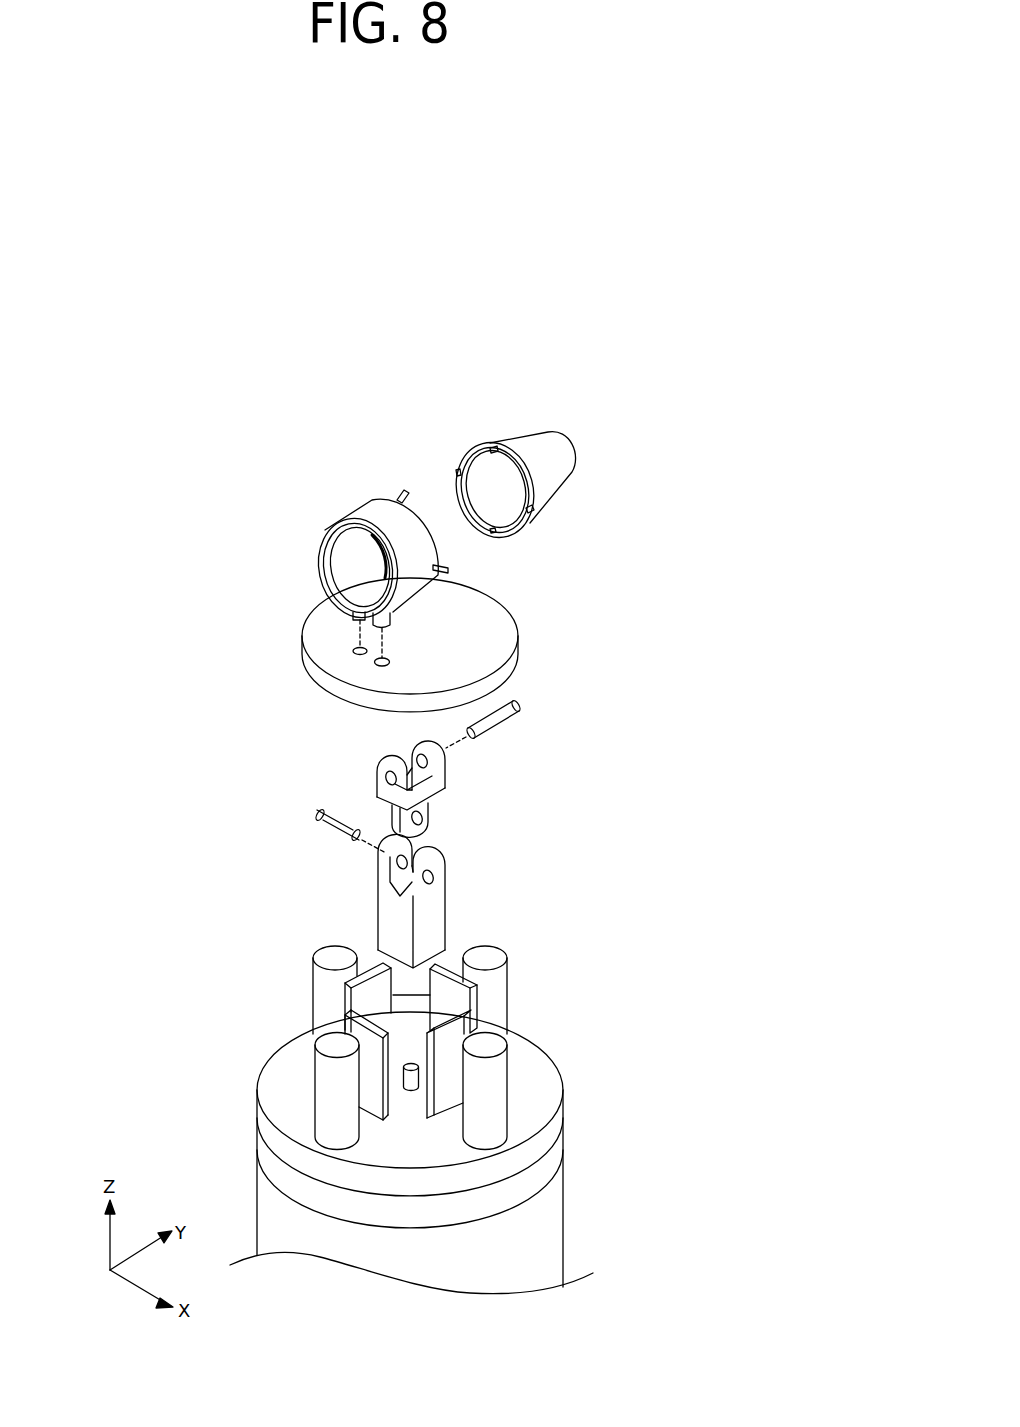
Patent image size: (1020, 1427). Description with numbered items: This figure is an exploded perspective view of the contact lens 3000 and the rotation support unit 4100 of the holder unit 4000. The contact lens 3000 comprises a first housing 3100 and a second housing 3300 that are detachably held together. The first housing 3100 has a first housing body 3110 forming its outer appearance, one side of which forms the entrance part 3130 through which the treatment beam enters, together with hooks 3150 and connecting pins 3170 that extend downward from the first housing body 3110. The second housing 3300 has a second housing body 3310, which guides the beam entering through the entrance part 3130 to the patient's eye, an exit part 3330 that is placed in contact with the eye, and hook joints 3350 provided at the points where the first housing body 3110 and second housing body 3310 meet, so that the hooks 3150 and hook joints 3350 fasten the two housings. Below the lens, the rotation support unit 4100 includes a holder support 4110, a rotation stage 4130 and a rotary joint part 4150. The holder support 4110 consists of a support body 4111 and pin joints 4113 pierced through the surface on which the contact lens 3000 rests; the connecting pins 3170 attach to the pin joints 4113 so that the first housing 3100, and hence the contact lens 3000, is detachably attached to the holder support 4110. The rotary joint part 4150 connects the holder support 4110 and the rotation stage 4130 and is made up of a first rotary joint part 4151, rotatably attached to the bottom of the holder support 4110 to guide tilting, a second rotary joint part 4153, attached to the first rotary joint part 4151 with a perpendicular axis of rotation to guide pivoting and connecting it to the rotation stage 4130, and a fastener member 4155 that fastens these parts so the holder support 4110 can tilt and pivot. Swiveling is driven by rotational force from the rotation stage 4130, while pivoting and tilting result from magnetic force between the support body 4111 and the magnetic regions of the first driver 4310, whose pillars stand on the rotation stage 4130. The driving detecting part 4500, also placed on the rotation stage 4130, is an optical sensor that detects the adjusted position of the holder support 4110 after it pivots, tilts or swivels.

The contact lens 3000 is at (408, 328).
The first housing 3100 is at (372, 416).
The first housing body 3110 is at (373, 508).
The entrance part 3130 is at (335, 542).
The hooks 3150 is at (402, 493).
The connecting pins 3170 is at (333, 597).
The second housing 3300 is at (510, 338).
The second housing body 3310 is at (517, 445).
The exit part 3330 is at (568, 433).
The hook joints 3350 is at (493, 450).
The holder unit 4000 is at (607, 1238).
The rotation support unit 4100 is at (692, 1090).
The holder support 4110 is at (616, 625).
The support body 4111 is at (507, 637).
The pin joints 4113 is at (389, 662).
The rotation stage 4130 is at (544, 1078).
The rotary joint part 4150 is at (616, 715).
The first rotary joint part 4151 is at (444, 778).
The second rotary joint part 4153 is at (433, 917).
The fastener member 4155 is at (512, 720).
The first driver 4310 is at (328, 1087).
The driving detecting part 4500 is at (342, 992).